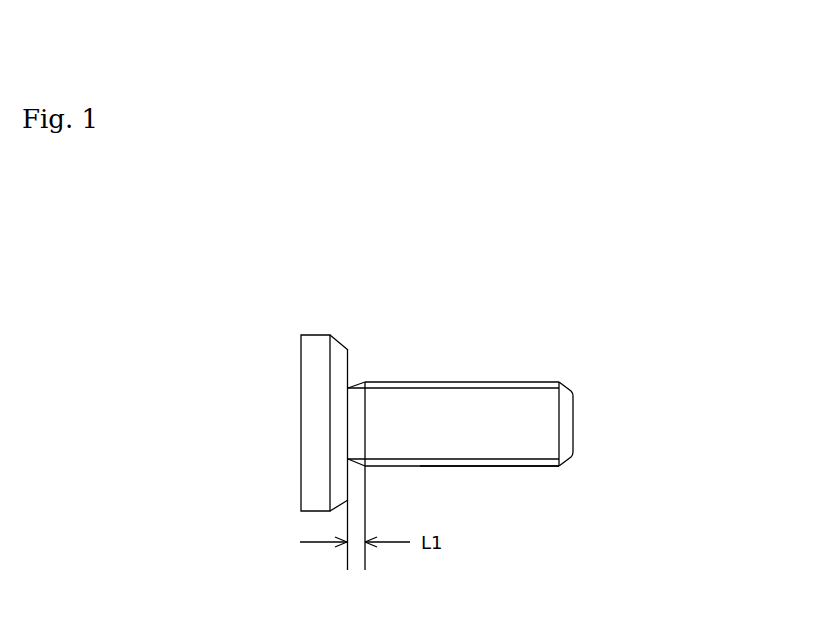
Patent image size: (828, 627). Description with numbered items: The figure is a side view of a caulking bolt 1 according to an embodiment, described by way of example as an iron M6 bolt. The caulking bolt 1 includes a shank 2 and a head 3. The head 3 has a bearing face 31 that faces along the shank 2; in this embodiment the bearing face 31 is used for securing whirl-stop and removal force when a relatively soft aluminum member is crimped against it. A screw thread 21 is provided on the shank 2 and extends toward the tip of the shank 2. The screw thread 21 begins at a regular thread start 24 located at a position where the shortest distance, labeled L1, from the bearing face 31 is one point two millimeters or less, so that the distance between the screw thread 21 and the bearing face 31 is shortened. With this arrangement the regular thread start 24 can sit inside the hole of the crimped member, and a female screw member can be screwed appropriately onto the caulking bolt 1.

The caulking bolt 1 is at (640, 299).
The shank 2 is at (547, 423).
The screw thread 21 is at (533, 465).
The regular thread start 24 is at (366, 382).
The head 3 is at (315, 342).
The bearing face 31 is at (352, 348).